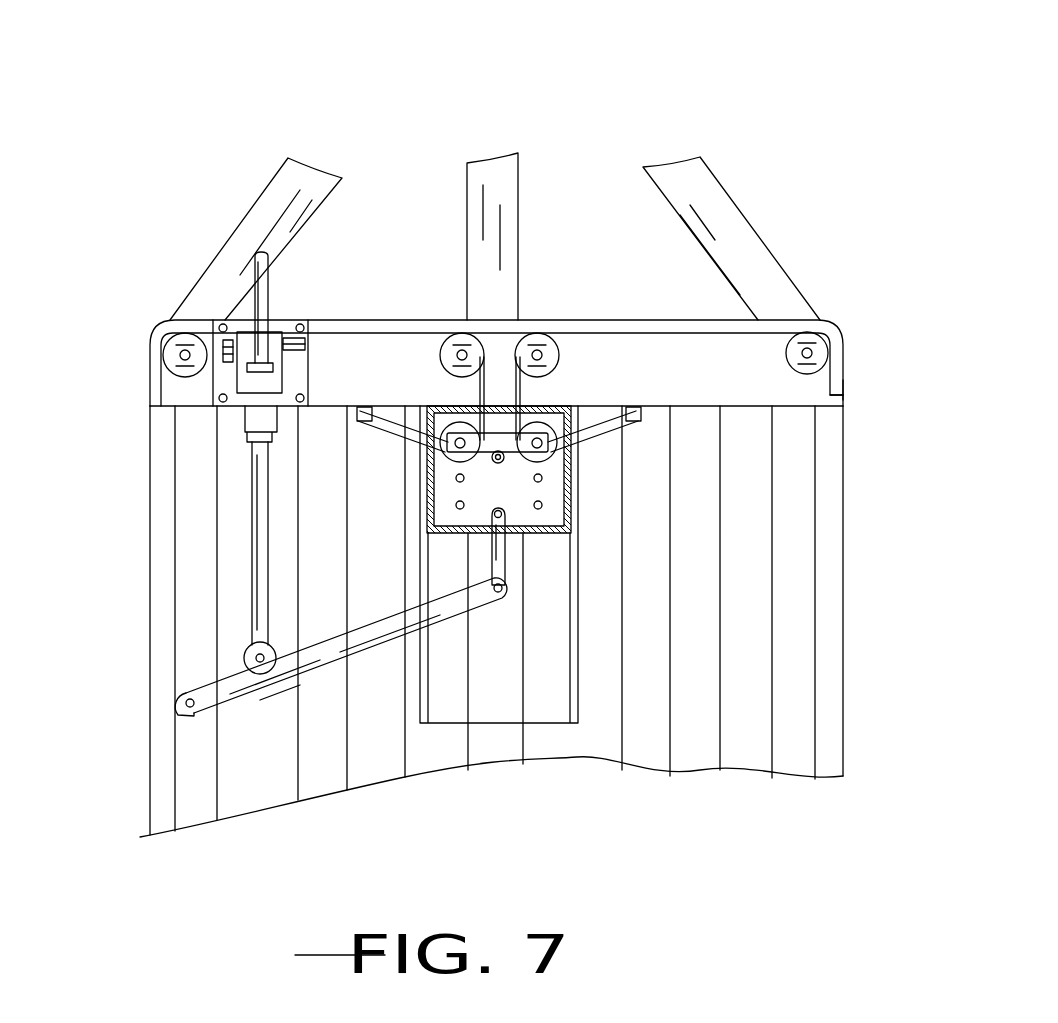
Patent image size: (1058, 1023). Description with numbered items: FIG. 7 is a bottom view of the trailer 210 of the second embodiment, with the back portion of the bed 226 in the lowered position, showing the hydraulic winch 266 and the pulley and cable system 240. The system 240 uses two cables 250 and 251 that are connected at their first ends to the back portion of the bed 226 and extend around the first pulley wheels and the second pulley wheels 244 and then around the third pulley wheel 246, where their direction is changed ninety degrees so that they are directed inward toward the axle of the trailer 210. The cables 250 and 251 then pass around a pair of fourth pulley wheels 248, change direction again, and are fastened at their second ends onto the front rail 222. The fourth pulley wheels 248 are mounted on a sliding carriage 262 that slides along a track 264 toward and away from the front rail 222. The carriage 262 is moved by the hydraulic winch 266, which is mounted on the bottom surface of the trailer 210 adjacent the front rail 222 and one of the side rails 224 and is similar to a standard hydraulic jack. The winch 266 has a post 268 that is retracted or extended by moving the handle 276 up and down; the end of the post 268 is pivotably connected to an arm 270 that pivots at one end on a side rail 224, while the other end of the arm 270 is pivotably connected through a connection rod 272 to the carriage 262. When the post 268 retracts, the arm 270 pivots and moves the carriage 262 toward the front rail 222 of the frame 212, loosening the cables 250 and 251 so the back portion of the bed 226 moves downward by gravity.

The trailer 210 is at (405, 128).
The frame 212 is at (847, 388).
The front rail 222 is at (820, 320).
The side rail 224 is at (843, 620).
The bed 226 is at (793, 687).
The pulley and cable system 240 is at (885, 393).
The second pulley wheels 244 is at (815, 350).
The third pulley wheel 246 is at (543, 337).
The fourth pulley wheels 248 is at (540, 428).
The cable 250 is at (160, 386).
The cable 251 is at (730, 333).
The sliding carriage 262 is at (573, 493).
The track 264 is at (580, 578).
The hydraulic winch 266 is at (275, 345).
The post 268 is at (248, 510).
The arm 270 is at (268, 682).
The connection rod 272 is at (510, 560).
The handle 276 is at (270, 280).